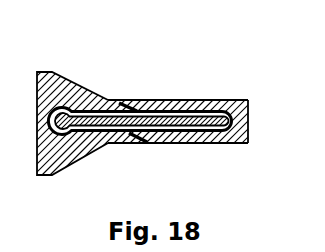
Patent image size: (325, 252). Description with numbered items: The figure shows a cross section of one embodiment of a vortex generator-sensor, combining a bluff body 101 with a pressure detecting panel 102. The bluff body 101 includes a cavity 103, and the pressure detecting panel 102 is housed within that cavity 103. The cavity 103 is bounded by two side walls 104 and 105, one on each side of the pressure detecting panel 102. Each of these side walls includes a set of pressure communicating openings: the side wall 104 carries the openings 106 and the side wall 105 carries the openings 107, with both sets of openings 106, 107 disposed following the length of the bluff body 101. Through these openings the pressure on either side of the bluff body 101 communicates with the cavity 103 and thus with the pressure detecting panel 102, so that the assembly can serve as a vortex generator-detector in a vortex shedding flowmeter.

The bluff body 101 is at (75, 81).
The pressure detecting panel 102 is at (184, 100).
The cavity 103 is at (207, 100).
The side wall 104 is at (161, 100).
The side wall 105 is at (165, 143).
The pressure communicating openings 106 is at (135, 100).
The pressure communicating openings 107 is at (132, 143).